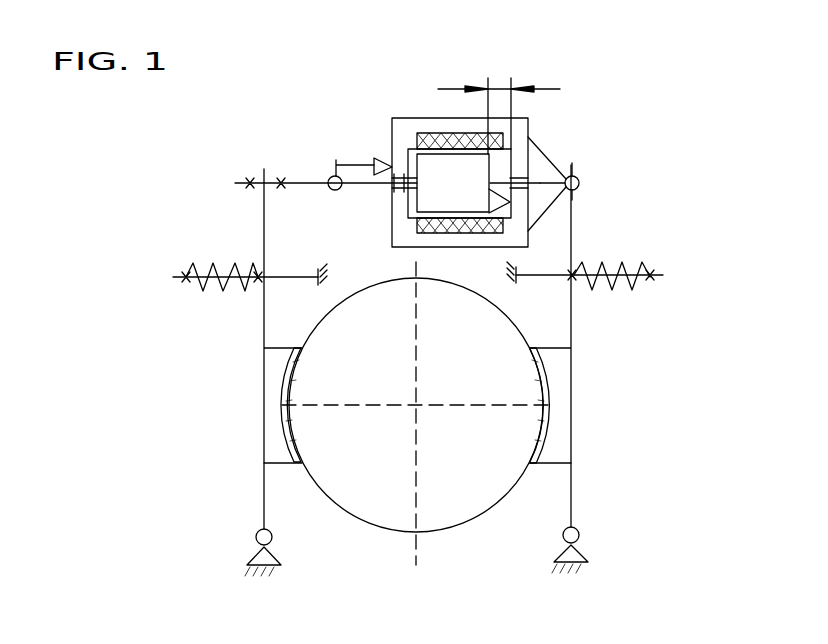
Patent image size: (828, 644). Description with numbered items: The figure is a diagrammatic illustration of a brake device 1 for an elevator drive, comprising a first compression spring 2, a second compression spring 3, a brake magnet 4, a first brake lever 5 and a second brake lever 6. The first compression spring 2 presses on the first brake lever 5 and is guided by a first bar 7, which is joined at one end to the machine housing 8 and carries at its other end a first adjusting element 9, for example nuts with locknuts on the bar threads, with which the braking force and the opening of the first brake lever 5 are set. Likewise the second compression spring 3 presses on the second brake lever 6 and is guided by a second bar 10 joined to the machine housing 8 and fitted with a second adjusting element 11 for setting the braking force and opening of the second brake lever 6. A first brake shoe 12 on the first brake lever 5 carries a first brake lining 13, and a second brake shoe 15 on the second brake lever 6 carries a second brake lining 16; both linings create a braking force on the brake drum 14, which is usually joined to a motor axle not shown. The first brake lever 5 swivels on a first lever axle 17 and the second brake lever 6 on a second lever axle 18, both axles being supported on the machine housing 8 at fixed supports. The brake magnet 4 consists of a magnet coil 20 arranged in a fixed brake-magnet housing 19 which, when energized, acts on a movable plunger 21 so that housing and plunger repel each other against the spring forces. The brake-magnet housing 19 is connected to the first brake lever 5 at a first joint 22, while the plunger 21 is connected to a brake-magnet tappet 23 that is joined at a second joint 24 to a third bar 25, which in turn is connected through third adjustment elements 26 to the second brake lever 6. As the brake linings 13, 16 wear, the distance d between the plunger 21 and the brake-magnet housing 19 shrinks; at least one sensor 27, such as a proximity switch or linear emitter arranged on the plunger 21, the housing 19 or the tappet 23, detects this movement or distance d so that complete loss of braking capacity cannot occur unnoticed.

The brake device 1 is at (627, 177).
The first compression spring 2 is at (627, 285).
The second compression spring 3 is at (203, 285).
The brake magnet 4 is at (422, 86).
The first brake lever 5 is at (571, 480).
The second brake lever 6 is at (264, 487).
The first bar 7 is at (640, 268).
The machine housing 8 is at (323, 283).
The first adjusting element 9 is at (575, 280).
The second bar 10 is at (175, 278).
The second adjusting element 11 is at (186, 268).
The first brake shoe 12 is at (565, 432).
The first brake lining 13 is at (533, 450).
The brake drum 14 is at (397, 502).
The second brake shoe 15 is at (277, 437).
The second brake lining 16 is at (297, 437).
The first lever axle 17 is at (580, 540).
The second lever axle 18 is at (256, 540).
The brake-magnet housing 19 is at (403, 229).
The magnet coil 20 is at (502, 138).
The plunger 21 is at (480, 165).
The first joint 22 is at (580, 186).
The brake-magnet tappet 23 is at (405, 149).
The second joint 24 is at (330, 177).
The third bar 25 is at (237, 183).
The third adjustment elements 26 is at (281, 178).
The sensor 27 is at (374, 160).
The distance d is at (500, 88).